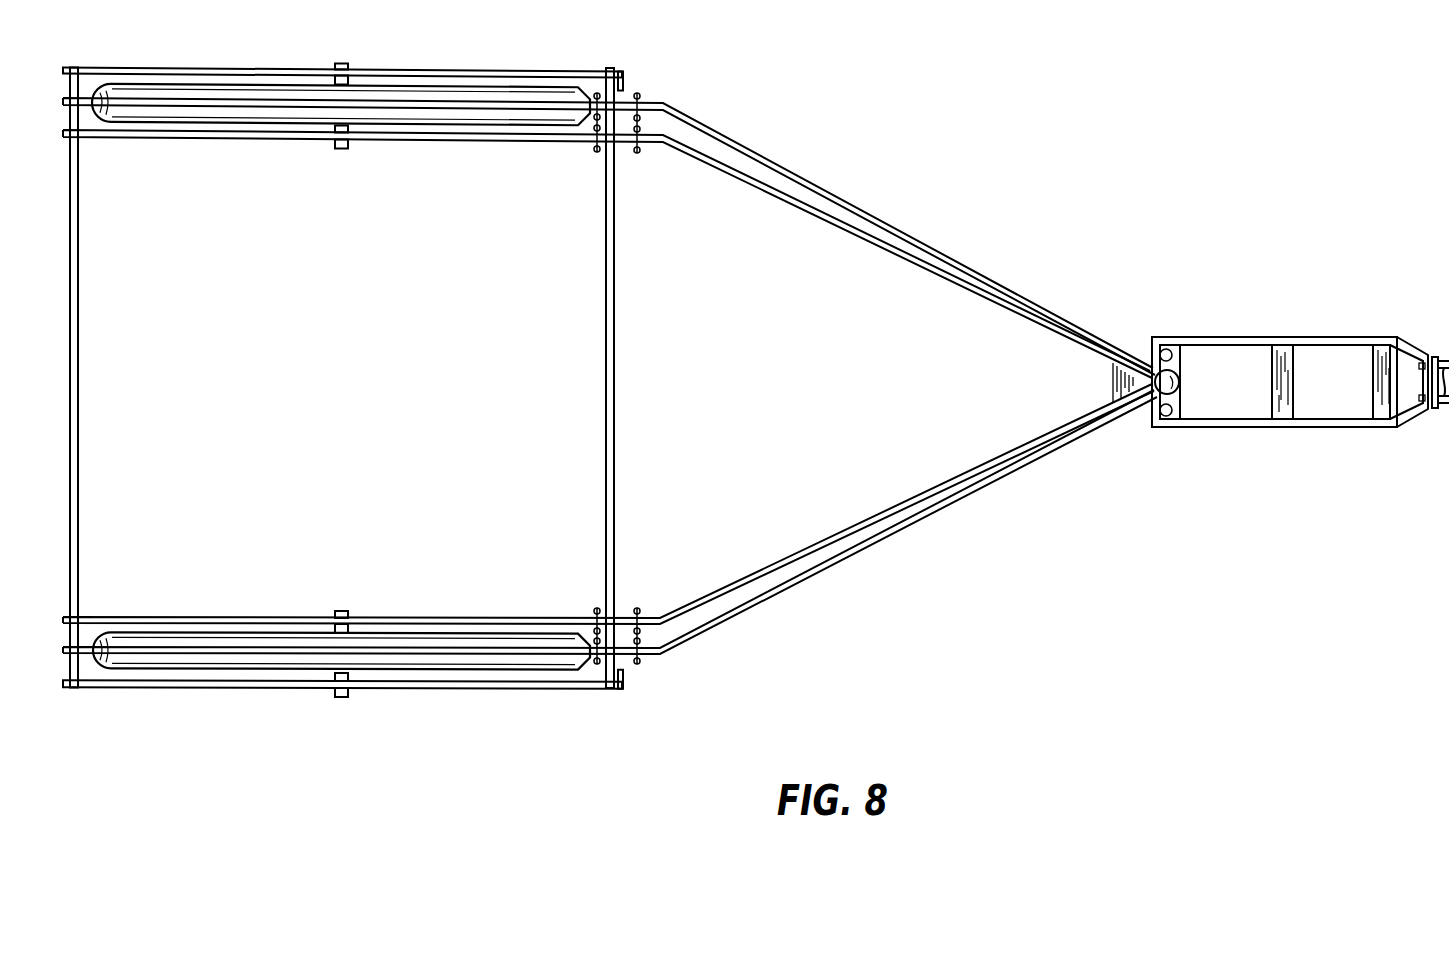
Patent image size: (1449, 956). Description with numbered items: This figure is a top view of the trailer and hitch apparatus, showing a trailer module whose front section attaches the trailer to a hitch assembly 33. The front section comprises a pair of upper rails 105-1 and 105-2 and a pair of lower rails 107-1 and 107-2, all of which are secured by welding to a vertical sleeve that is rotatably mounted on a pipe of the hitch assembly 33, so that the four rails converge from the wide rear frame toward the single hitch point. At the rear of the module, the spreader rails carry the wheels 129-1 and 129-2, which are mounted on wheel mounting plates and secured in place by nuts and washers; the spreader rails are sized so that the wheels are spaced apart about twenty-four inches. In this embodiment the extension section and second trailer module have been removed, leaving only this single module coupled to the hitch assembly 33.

The hitch assembly 33 is at (1313, 427).
The upper rail 105-1 is at (843, 530).
The upper rail 105-2 is at (867, 243).
The lower rail 107-1 is at (847, 553).
The lower rail 107-2 is at (813, 187).
The wheel 129-1 is at (428, 672).
The wheel 129-2 is at (432, 125).